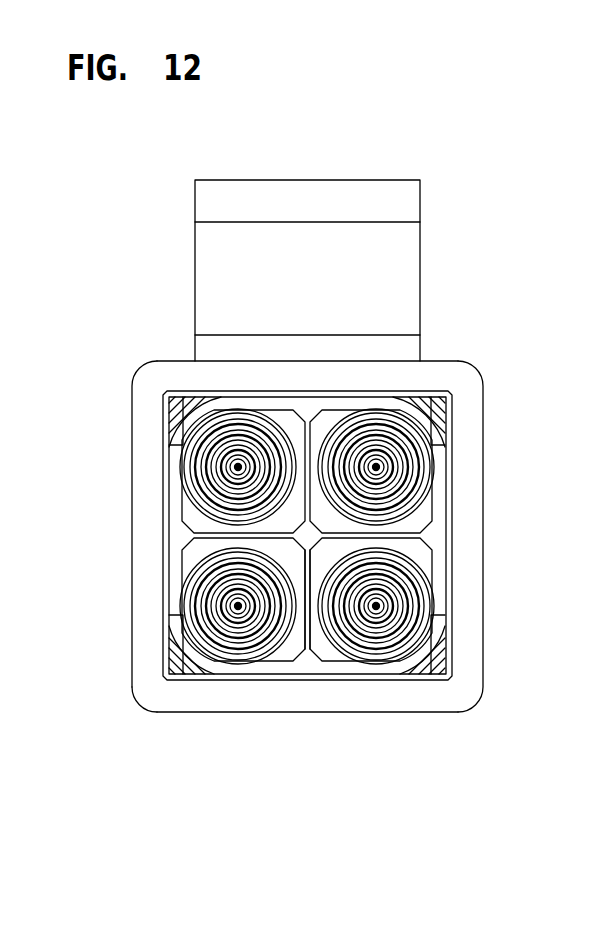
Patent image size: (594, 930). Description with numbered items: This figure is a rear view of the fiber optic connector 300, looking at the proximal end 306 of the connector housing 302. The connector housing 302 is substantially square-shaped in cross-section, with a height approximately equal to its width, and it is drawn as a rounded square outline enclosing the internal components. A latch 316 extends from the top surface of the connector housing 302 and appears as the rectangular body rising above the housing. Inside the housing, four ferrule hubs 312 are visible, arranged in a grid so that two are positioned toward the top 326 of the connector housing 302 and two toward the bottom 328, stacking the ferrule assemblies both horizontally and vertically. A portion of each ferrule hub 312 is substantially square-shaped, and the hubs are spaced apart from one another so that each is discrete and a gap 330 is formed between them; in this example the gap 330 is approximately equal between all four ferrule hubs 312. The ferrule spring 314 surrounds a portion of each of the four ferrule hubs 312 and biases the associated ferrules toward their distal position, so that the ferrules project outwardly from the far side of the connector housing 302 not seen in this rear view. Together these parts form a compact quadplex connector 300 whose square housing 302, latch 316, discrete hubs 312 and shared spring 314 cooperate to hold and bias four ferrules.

The fiber optic connector 300 is at (91, 204).
The connector housing 302 is at (130, 532).
The proximal end 306 is at (137, 712).
The ferrule hub 312 is at (288, 418).
The ferrule spring 314 is at (175, 566).
The latch 316 is at (421, 248).
The top 326 is at (135, 353).
The bottom 328 is at (210, 727).
The gap 330 is at (310, 648).